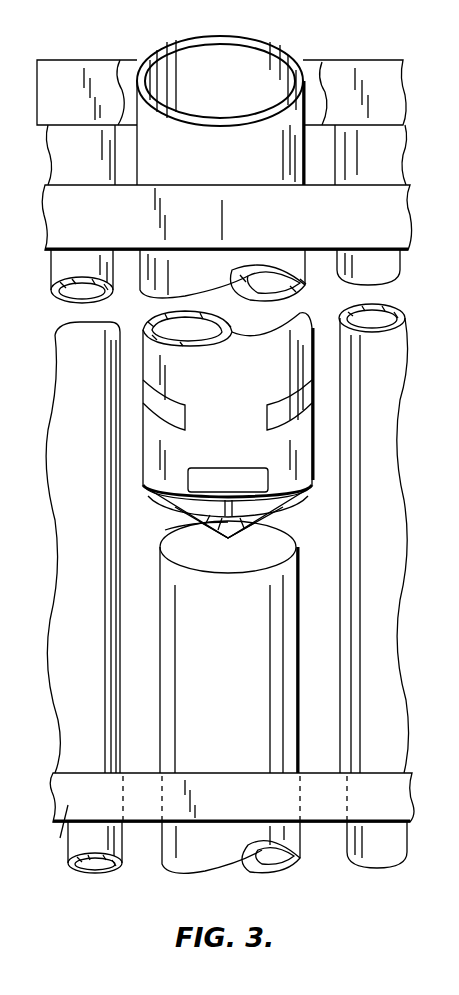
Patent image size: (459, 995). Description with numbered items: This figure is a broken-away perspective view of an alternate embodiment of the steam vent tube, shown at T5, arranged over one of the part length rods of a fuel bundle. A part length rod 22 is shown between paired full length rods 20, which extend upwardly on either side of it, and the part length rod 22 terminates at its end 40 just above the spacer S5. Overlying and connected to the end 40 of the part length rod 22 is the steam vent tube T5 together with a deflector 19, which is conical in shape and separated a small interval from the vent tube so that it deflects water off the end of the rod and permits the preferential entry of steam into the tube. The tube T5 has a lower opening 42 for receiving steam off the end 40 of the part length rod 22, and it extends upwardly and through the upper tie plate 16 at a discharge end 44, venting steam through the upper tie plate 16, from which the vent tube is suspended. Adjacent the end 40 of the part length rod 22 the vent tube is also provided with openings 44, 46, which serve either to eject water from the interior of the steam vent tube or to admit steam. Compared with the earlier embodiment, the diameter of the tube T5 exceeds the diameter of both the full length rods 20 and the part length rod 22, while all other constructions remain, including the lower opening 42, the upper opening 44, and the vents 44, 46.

The upper tie plate 16 is at (398, 88).
The full length rods 20 is at (102, 722).
The part length rod 22 is at (244, 722).
The end 40 is at (240, 566).
The lower opening 42 is at (290, 497).
The discharge end 44 is at (232, 92).
The openings 46 is at (268, 405).
The deflector 19 is at (165, 538).
The steam vent tube T5 is at (268, 38).
The spacer S5 is at (52, 833).